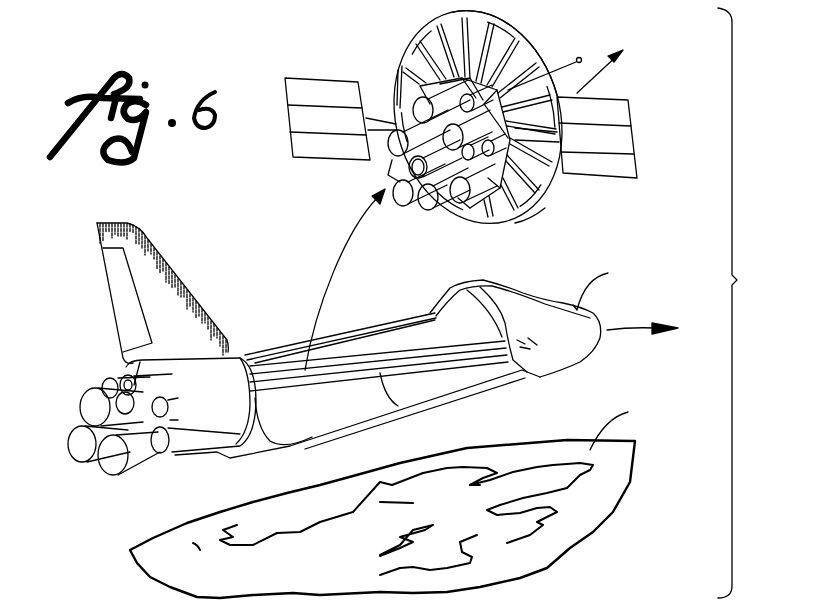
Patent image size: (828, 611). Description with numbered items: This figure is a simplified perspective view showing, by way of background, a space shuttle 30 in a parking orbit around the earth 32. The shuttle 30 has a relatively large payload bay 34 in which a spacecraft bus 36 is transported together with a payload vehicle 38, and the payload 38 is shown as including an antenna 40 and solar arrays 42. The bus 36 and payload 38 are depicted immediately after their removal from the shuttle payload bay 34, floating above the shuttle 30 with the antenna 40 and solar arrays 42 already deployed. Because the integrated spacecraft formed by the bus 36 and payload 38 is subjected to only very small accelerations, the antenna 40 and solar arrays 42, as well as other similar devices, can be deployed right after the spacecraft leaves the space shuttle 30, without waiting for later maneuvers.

The space shuttle 30 is at (573, 347).
The earth 32 is at (468, 458).
The payload bay 34 is at (267, 357).
The spacecraft bus 36 is at (390, 156).
The payload vehicle 38 is at (568, 189).
The antenna 40 is at (540, 216).
The solar arrays 42 is at (306, 78).